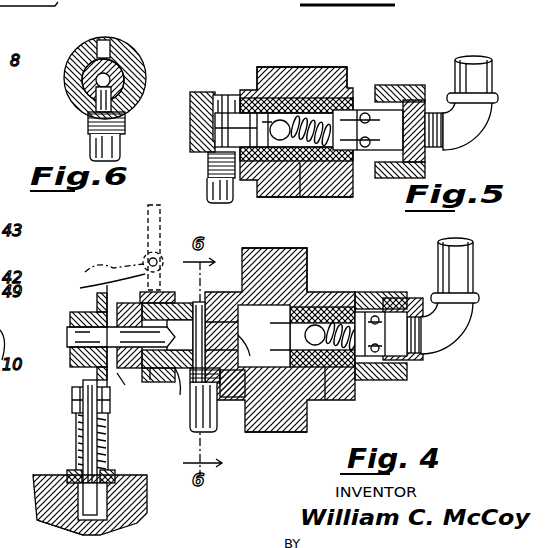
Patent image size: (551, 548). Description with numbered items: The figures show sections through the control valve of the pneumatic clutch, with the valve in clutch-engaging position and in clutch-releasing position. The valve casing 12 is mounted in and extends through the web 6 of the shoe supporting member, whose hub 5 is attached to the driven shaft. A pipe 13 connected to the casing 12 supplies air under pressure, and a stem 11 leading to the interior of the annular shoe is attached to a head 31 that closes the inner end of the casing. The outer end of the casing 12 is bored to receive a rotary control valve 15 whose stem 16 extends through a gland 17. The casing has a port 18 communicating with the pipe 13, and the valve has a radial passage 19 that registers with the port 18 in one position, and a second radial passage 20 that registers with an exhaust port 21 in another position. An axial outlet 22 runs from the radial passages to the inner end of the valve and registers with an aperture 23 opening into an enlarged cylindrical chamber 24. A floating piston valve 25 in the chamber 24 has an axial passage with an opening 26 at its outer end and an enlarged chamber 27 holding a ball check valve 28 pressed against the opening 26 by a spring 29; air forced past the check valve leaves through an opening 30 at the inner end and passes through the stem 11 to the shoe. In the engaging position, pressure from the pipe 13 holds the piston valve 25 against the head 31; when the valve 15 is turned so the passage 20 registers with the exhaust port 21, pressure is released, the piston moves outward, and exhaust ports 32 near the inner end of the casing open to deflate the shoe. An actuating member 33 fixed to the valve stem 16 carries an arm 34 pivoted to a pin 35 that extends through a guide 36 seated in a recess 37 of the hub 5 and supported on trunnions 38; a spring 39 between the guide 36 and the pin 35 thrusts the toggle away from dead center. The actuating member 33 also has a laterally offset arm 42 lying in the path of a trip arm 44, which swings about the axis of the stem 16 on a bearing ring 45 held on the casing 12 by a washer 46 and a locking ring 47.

In FIG. 4, the hub 5 is at (147, 500).
In FIG. 5, the web 6 is at (318, 197).
In FIG. 4, the web 6 is at (285, 432).
In FIG. 5, the stem 11 is at (496, 72).
In FIG. 4, the stem 11 is at (478, 275).
In FIG. 6, the valve casing 12 is at (143, 68).
In FIG. 5, the valve casing 12 is at (352, 186).
In FIG. 4, the valve casing 12 is at (340, 390).
In FIG. 6, the pipe 13 is at (90, 148).
In FIG. 5, the pipe 13 is at (208, 195).
In FIG. 4, the pipe 13 is at (215, 425).
In FIG. 6, the rotary control valve 15 is at (120, 60).
In FIG. 5, the rotary control valve 15 is at (204, 92).
In FIG. 4, the rotary control valve 15 is at (155, 342).
In FIG. 4, the valve stem 16 is at (67, 340).
In FIG. 4, the gland 17 is at (120, 378).
In FIG. 6, the port 18 is at (128, 113).
In FIG. 5, the port 18 is at (208, 165).
In FIG. 4, the port 18 is at (216, 395).
In FIG. 6, the radial passage 19 is at (92, 110).
In FIG. 4, the radial passage 19 is at (171, 390).
In FIG. 6, the second radial passage 20 is at (76, 60).
In FIG. 5, the second radial passage 20 is at (215, 121).
In FIG. 4, the second radial passage 20 is at (200, 292).
In FIG. 6, the exhaust port 21 is at (103, 40).
In FIG. 5, the exhaust port 21 is at (221, 95).
In FIG. 4, the exhaust port 21 is at (193, 305).
In FIG. 6, the axial outlet 22 is at (86, 93).
In FIG. 5, the axial outlet 22 is at (215, 136).
In FIG. 4, the axial outlet 22 is at (290, 318).
In FIG. 5, the aperture 23 is at (250, 113).
In FIG. 4, the aperture 23 is at (257, 348).
In FIG. 5, the cylindrical chamber 24 is at (397, 160).
In FIG. 4, the cylindrical chamber 24 is at (274, 270).
In FIG. 5, the floating piston valve 25 is at (346, 86).
In FIG. 4, the floating piston valve 25 is at (340, 292).
In FIG. 5, the opening 26 is at (272, 113).
In FIG. 4, the opening 26 is at (290, 336).
In FIG. 5, the enlarged chamber 27 is at (300, 190).
In FIG. 4, the enlarged chamber 27 is at (340, 370).
In FIG. 5, the ball check valve 28 is at (300, 118).
In FIG. 4, the ball check valve 28 is at (316, 325).
In FIG. 5, the spring 29 is at (347, 215).
In FIG. 4, the spring 29 is at (335, 350).
In FIG. 5, the opening 30 is at (360, 118).
In FIG. 4, the opening 30 is at (375, 312).
In FIG. 5, the head 31 is at (428, 160).
In FIG. 4, the head 31 is at (425, 365).
In FIG. 5, the exhaust ports 32 is at (380, 85).
In FIG. 4, the exhaust ports 32 is at (362, 292).
In FIG. 4, the actuating member 33 is at (70, 314).
In FIG. 4, the arm 34 is at (72, 392).
In FIG. 4, the pin 35 is at (100, 520).
In FIG. 4, the guide 36 is at (78, 450).
In FIG. 4, the recess 37 is at (70, 520).
In FIG. 4, the trunnions 38 is at (70, 472).
In FIG. 4, the spring 39 is at (78, 420).
In FIG. 4, the laterally offset arm 42 is at (143, 262).
In FIG. 4, the trip arm 44 is at (148, 230).
In FIG. 4, the bearing ring 45 is at (85, 272).
In FIG. 4, the washer 46 is at (102, 284).
In FIG. 4, the locking ring 47 is at (150, 382).